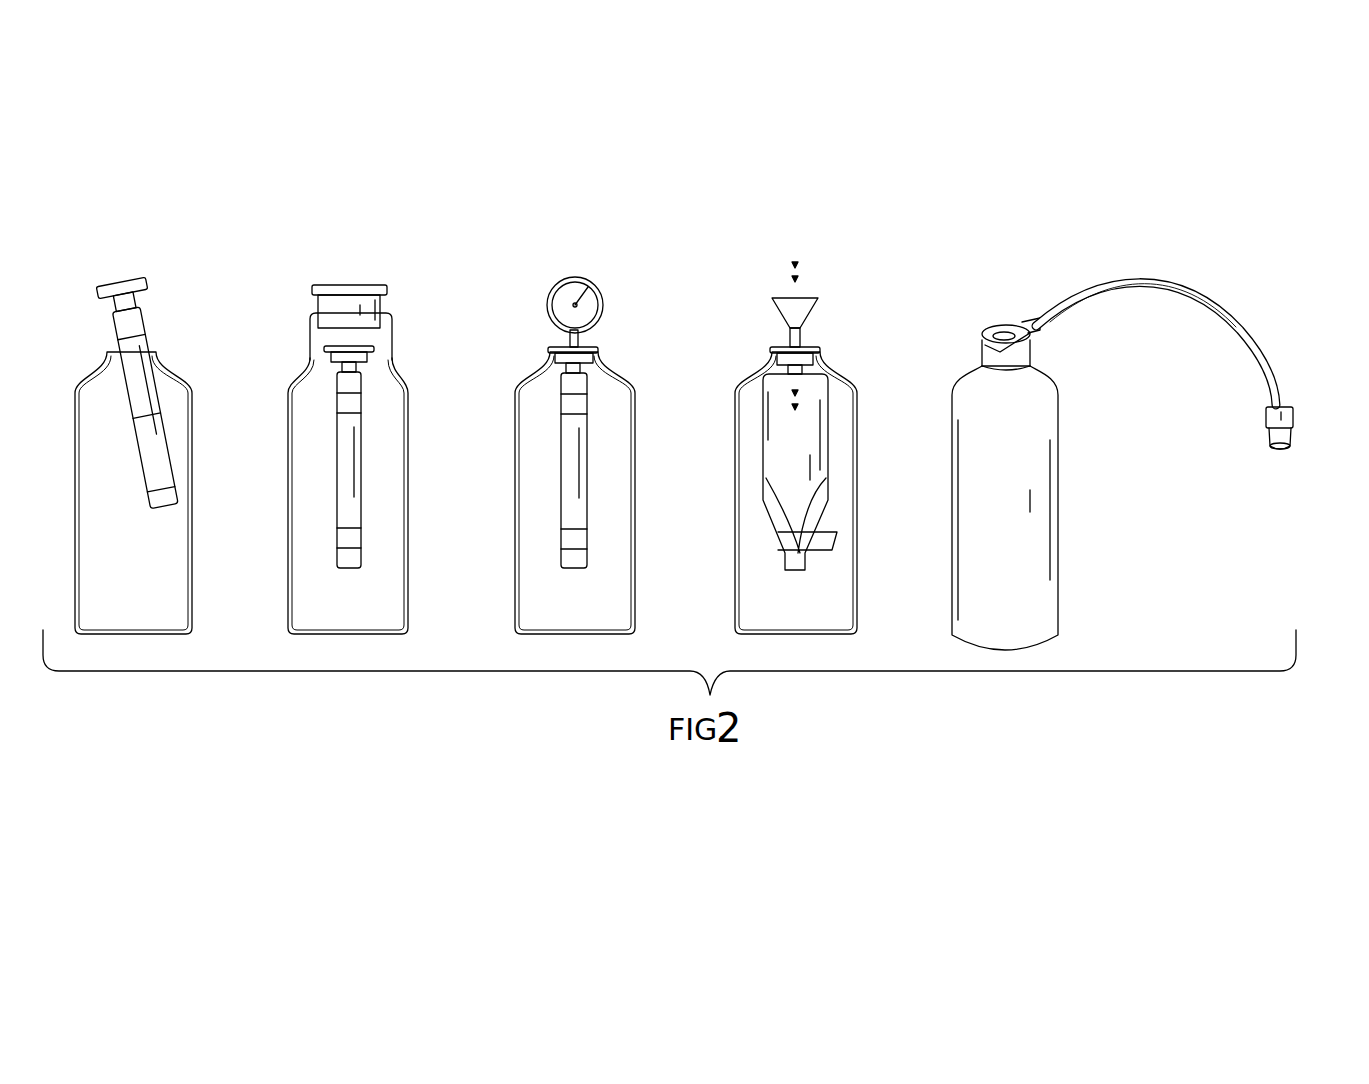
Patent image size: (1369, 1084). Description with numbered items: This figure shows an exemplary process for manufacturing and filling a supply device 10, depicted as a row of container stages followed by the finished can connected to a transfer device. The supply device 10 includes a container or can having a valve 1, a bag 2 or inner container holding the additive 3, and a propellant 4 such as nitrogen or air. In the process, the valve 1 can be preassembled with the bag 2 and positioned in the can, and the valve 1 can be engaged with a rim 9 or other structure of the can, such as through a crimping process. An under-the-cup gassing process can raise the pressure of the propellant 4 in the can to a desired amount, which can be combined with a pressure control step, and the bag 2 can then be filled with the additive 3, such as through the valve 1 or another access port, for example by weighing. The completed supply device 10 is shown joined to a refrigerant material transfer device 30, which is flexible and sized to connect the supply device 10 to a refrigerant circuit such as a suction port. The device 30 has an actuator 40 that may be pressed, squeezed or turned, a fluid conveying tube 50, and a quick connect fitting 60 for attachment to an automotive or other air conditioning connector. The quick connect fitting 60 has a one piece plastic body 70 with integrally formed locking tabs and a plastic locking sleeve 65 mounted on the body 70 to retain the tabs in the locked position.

The valve 1 is at (137, 635).
The bag 2 is at (355, 635).
The additive 3 is at (604, 466).
The propellant 4 is at (800, 635).
The rim 9 is at (597, 353).
The supply device 10 is at (193, 492).
The refrigerant material transfer device 30 is at (1162, 339).
The actuator 40 is at (999, 307).
The fluid conveying tube 50 is at (1146, 294).
The quick connect fitting 60 is at (1292, 419).
The locking sleeve 65 is at (1266, 411).
The plastic body 70 is at (1279, 452).